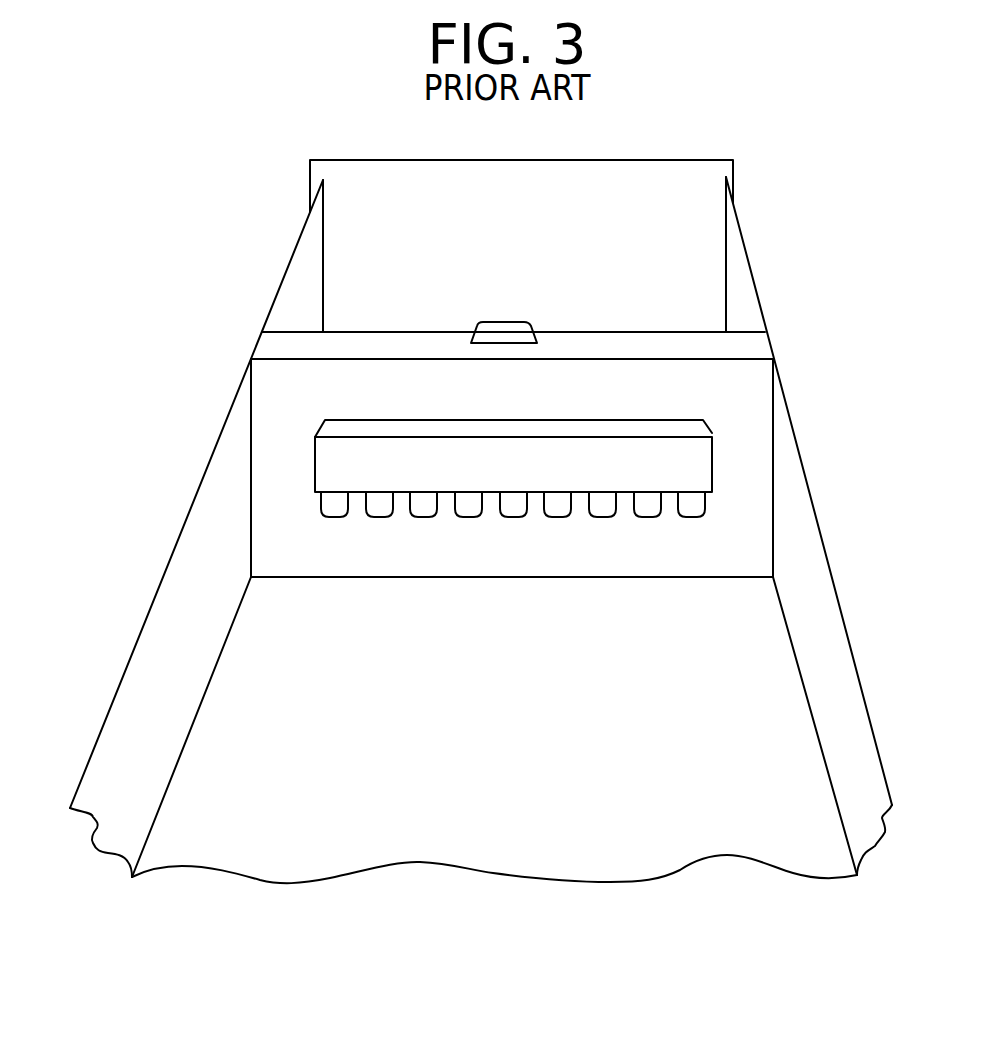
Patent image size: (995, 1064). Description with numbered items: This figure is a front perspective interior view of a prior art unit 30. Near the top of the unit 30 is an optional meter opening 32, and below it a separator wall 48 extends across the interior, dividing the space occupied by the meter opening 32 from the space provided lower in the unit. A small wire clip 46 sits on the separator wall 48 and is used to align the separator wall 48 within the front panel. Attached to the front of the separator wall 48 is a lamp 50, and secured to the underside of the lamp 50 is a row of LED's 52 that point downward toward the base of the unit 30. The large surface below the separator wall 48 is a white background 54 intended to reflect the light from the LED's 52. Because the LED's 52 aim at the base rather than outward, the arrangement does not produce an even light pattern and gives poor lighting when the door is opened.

The unit 30 is at (143, 577).
The meter opening 32 is at (401, 263).
The wire clip 46 is at (515, 322).
The separator wall 48 is at (742, 383).
The lamp 50 is at (698, 461).
The LED's 52 is at (693, 500).
The white background 54 is at (492, 754).